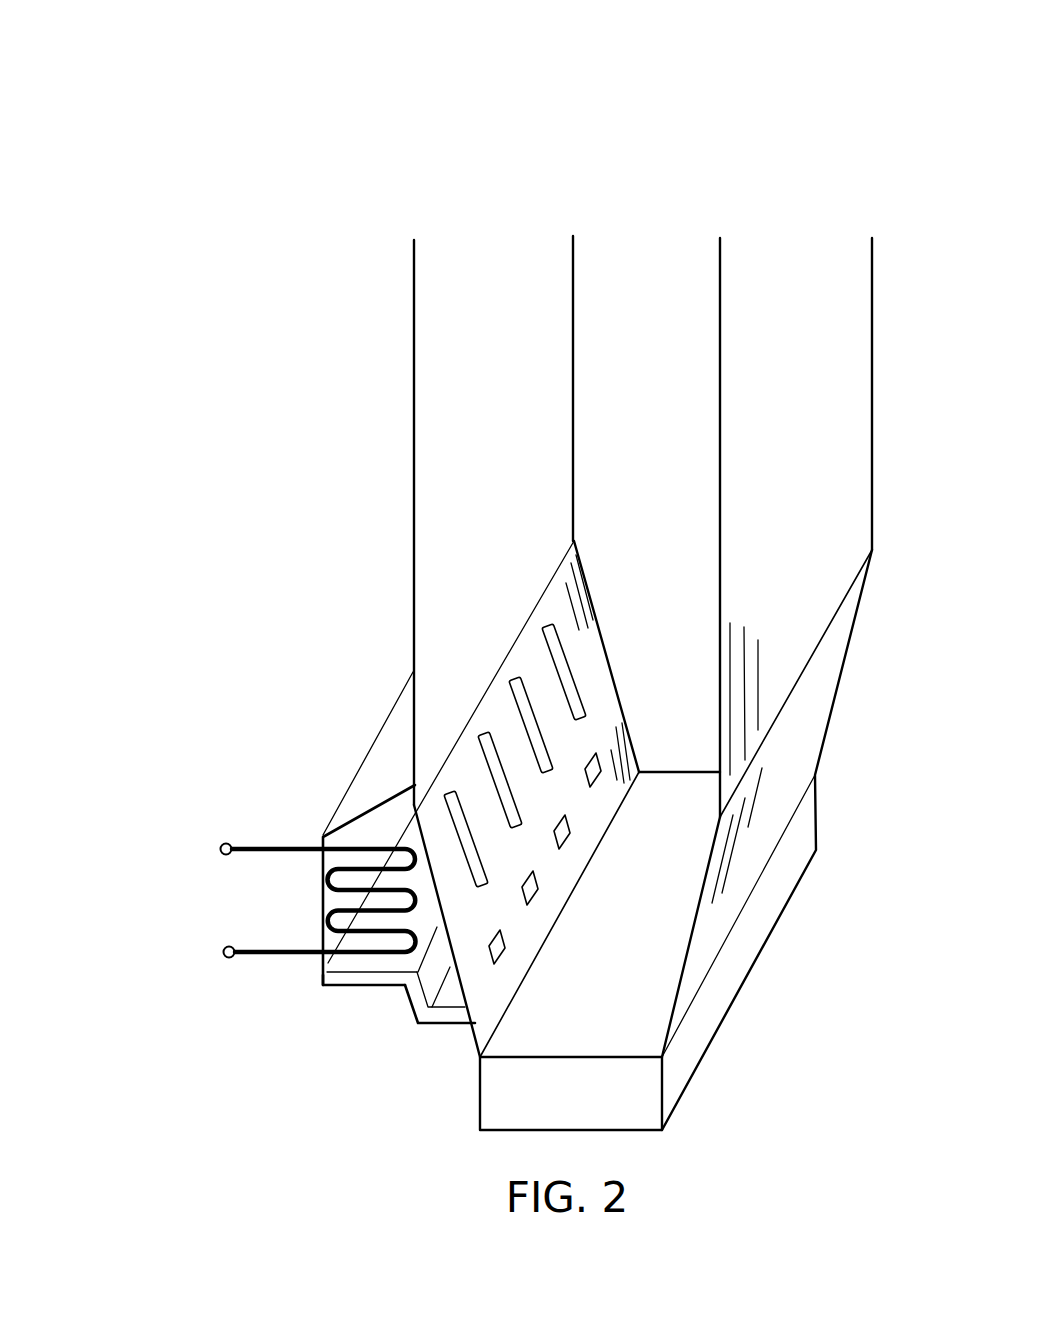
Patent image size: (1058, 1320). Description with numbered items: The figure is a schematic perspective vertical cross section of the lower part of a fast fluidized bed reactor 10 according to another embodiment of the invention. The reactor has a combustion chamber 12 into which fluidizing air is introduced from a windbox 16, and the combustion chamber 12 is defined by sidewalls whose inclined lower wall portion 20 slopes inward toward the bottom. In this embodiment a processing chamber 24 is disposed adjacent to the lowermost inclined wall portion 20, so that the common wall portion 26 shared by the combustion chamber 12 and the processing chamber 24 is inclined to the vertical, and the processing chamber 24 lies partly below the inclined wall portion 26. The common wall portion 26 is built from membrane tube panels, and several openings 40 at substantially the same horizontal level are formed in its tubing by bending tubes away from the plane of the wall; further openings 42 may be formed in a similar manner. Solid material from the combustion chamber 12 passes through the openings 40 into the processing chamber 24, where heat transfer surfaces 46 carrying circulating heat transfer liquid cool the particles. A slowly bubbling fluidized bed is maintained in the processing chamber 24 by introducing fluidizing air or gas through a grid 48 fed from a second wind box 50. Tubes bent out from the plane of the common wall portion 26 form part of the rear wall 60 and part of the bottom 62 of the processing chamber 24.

The fast fluidized bed reactor 10 is at (718, 123).
The combustion chamber 12 is at (540, 1010).
The windbox 16 is at (745, 952).
The inclined lower wall portion 20 is at (618, 728).
The processing chamber 24 is at (278, 813).
The common wall portion 26 is at (554, 575).
The openings 40 is at (555, 622).
The openings 42 is at (532, 887).
The heat transfer surfaces 46 is at (275, 953).
The grid 48 is at (378, 960).
The second wind box 50 is at (382, 978).
The rear wall 60 is at (323, 908).
The bottom 62 is at (308, 1013).